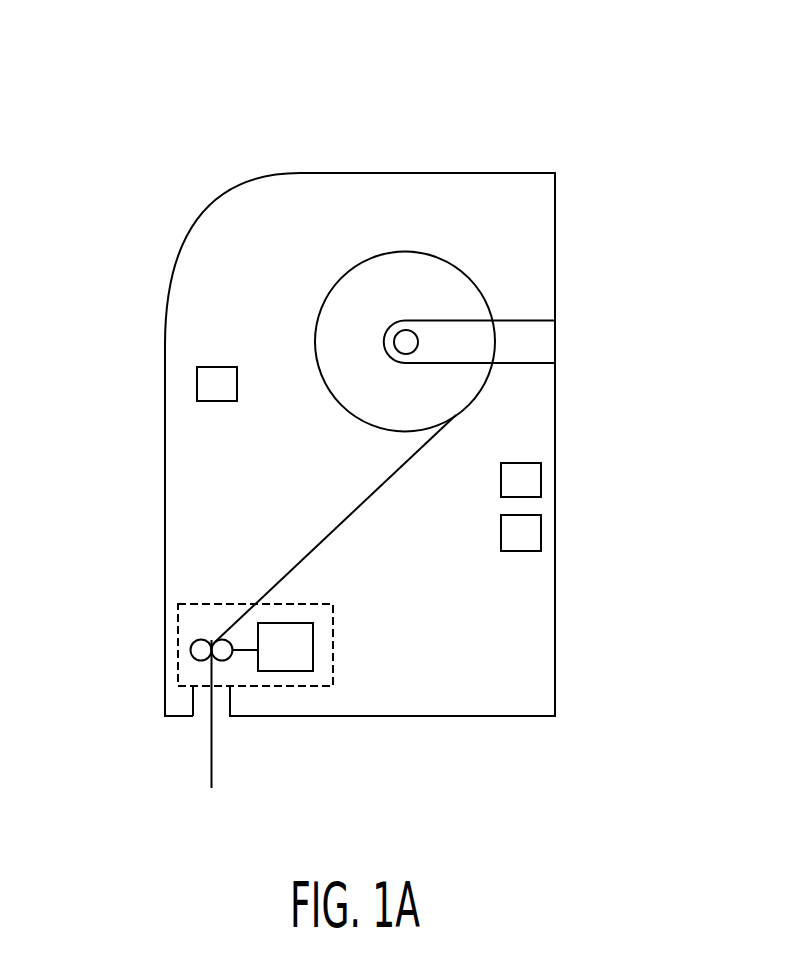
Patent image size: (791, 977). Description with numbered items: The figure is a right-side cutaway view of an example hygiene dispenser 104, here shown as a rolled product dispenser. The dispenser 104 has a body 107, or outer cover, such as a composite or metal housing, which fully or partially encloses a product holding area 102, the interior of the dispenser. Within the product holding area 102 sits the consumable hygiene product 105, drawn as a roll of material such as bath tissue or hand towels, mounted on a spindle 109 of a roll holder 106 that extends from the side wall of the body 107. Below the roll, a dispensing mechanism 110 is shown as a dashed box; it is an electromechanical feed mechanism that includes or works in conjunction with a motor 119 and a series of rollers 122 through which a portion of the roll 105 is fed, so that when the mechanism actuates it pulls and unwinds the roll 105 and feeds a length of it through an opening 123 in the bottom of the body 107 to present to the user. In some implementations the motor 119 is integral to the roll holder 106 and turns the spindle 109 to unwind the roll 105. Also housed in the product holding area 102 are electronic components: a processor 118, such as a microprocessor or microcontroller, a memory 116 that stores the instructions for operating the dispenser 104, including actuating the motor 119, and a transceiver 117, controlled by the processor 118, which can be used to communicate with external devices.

The hygiene dispenser 104 is at (120, 125).
The body 107 is at (250, 183).
The product holding area 102 is at (357, 230).
The consumable hygiene product 105 is at (365, 393).
The spindle 109 is at (408, 338).
The roll holder 106 is at (547, 343).
The processor 118 is at (208, 383).
The memory 116 is at (523, 480).
The transceiver 117 is at (527, 531).
The dispensing mechanism 110 is at (332, 638).
The rollers 122 is at (200, 651).
The motor 119 is at (285, 655).
The opening 123 is at (202, 727).